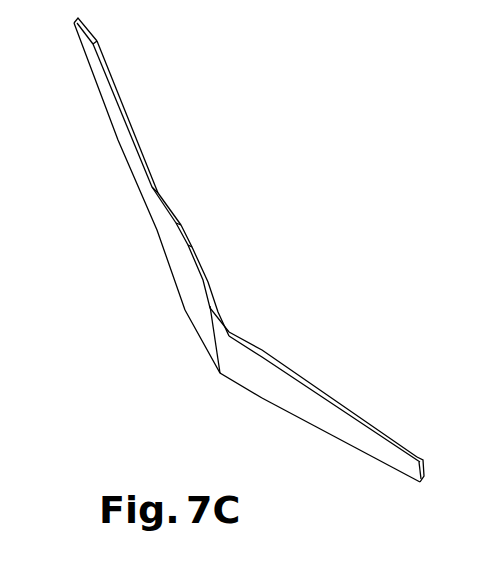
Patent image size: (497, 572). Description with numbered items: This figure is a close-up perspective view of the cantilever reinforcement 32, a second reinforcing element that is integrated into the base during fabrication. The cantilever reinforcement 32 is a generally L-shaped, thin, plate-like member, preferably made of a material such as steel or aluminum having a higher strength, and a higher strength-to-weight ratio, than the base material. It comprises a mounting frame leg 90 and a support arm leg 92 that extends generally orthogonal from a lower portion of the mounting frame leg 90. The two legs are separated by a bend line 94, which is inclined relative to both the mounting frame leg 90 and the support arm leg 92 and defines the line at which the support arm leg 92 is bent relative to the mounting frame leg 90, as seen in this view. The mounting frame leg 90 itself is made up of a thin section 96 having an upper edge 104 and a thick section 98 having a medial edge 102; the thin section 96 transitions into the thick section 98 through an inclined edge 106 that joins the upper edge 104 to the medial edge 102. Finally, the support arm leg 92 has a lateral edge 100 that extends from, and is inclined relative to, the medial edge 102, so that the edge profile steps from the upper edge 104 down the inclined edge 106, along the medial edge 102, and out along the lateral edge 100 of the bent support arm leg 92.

The mounting frame leg 90 is at (105, 63).
The support arm leg 92 is at (387, 450).
The bend line 94 is at (215, 347).
The thin section 96 is at (121, 127).
The thick section 98 is at (193, 303).
The lateral edge 100 is at (325, 393).
The medial edge 102 is at (207, 283).
The upper edge 104 is at (138, 138).
The inclined edge 106 is at (177, 222).
The cantilever reinforcement 32 is at (227, 211).